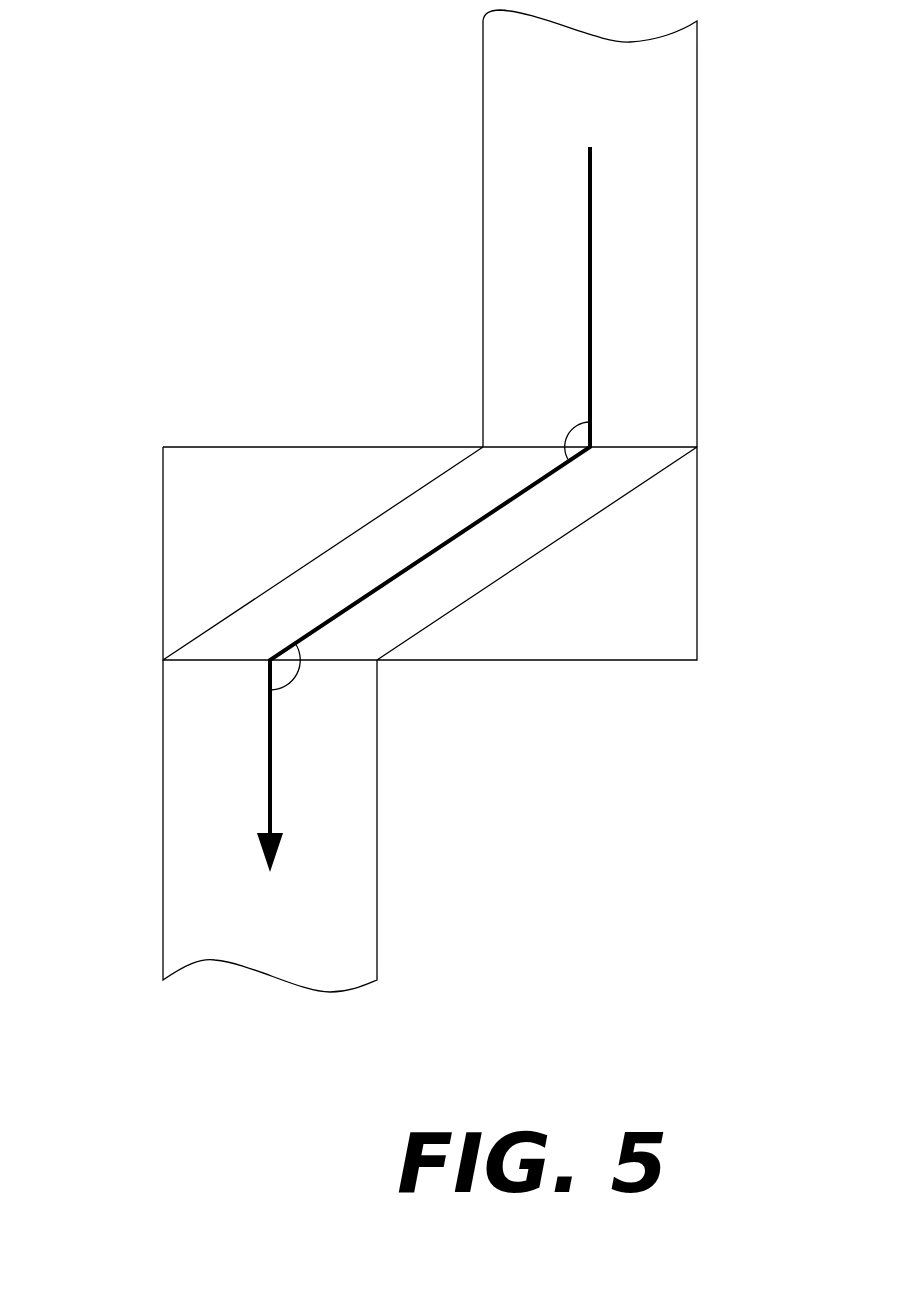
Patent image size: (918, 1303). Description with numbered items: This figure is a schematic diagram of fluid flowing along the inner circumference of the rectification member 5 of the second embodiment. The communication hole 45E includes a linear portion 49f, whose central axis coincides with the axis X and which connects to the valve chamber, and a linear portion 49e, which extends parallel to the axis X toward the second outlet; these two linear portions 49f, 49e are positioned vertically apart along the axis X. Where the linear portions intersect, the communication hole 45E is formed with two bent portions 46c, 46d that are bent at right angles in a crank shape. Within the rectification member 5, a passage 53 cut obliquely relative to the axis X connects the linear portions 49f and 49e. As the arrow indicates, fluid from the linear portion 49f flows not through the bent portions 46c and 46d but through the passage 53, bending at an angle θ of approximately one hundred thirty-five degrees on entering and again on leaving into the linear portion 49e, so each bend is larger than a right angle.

The communication hole 45E is at (409, 501).
The linear portion 49f is at (697, 203).
The linear portion 49e is at (377, 810).
The bent portion 46c is at (165, 494).
The bent portion 46d is at (685, 572).
The passage 53 is at (400, 518).
The rectification member 5 is at (660, 447).